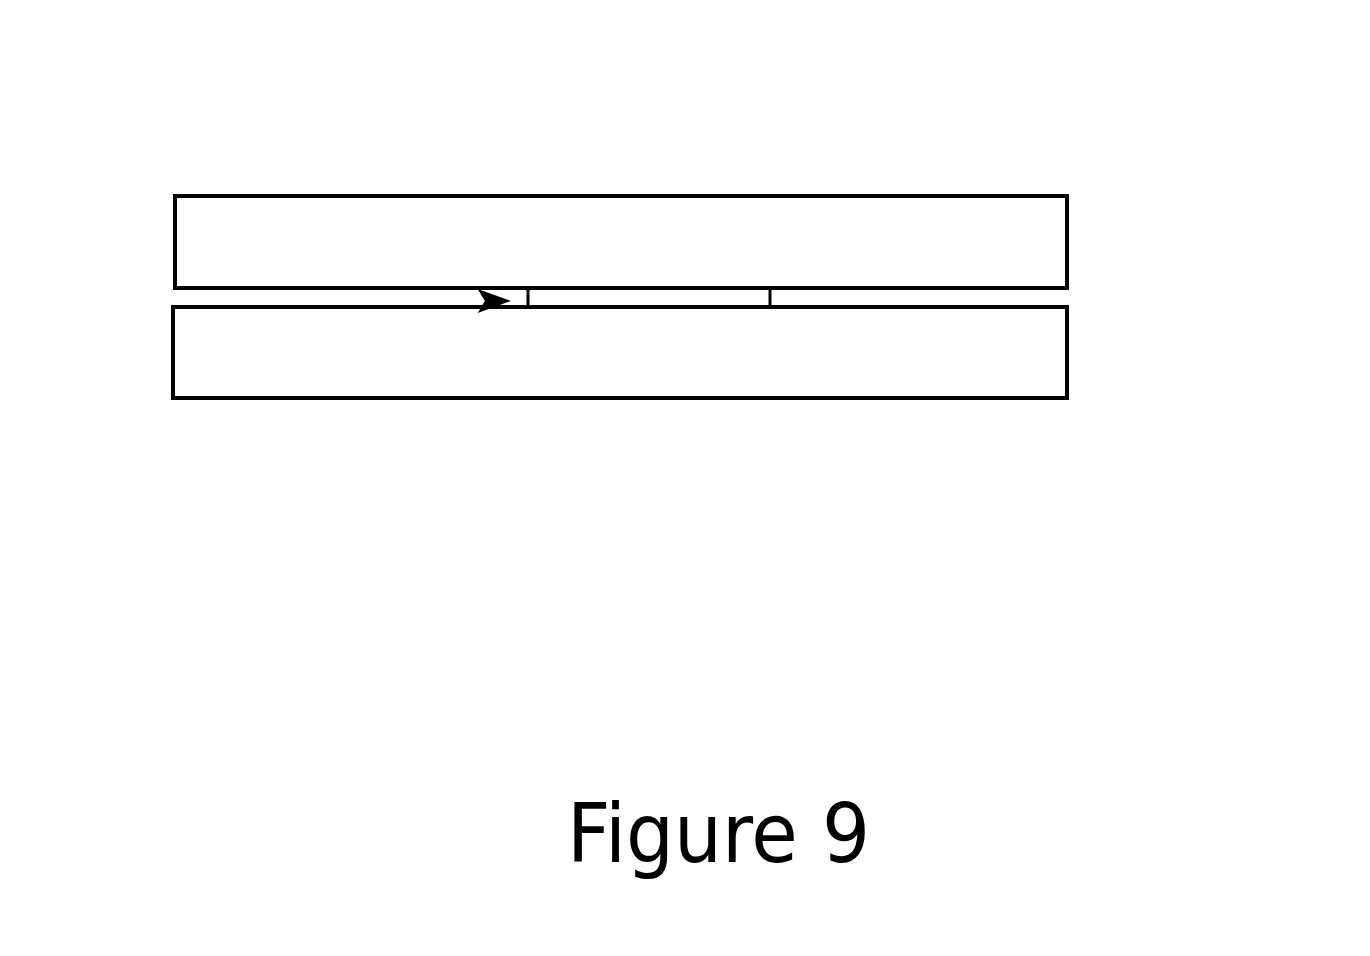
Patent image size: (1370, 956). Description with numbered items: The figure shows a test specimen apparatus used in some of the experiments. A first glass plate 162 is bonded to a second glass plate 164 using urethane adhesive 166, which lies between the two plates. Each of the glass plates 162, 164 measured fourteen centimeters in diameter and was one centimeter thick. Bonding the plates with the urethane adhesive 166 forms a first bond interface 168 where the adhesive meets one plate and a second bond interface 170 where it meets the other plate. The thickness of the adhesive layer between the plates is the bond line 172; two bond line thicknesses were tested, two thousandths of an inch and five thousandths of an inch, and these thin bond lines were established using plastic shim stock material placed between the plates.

The first glass plate 162 is at (1067, 250).
The second glass plate 164 is at (1067, 359).
The urethane adhesive 166 is at (690, 297).
The first bond interface 168 is at (613, 286).
The second bond interface 170 is at (612, 308).
The bond line 172 is at (485, 301).